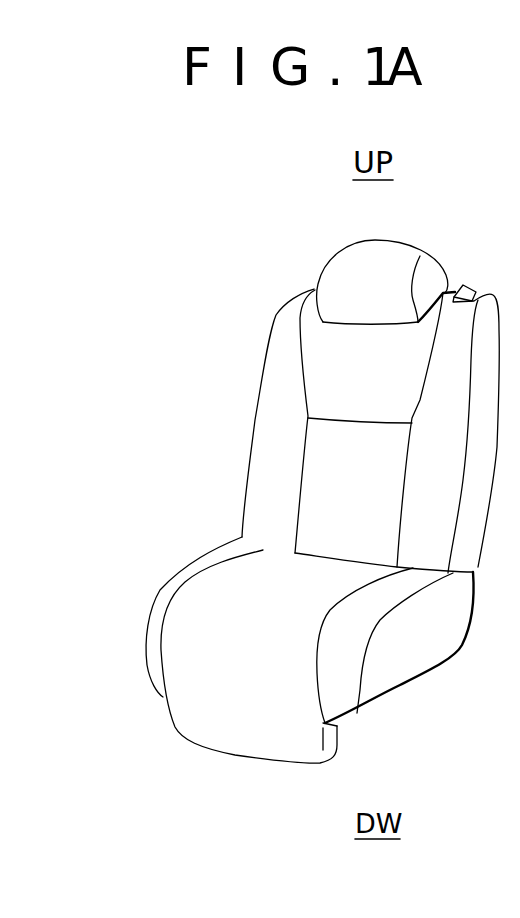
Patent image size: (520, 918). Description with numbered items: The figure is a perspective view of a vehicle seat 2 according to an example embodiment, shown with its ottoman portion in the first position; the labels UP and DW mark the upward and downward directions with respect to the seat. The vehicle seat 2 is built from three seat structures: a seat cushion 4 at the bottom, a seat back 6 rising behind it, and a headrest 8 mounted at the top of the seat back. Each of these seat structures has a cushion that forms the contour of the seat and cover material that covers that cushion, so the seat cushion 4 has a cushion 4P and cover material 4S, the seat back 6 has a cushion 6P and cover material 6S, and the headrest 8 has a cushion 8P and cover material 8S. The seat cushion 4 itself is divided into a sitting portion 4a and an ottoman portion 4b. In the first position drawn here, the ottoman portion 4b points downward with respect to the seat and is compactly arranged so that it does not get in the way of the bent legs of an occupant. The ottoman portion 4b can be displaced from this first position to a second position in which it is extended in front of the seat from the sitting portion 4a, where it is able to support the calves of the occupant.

The vehicle seat 2 is at (467, 242).
The seat cushion 4 is at (275, 599).
The cover material 4S is at (275, 599).
The cushion 4P is at (275, 599).
The sitting portion 4a is at (260, 567).
The ottoman portion 4b is at (193, 655).
The seat back 6 is at (295, 429).
The cover material 6S is at (295, 429).
The cushion 6P is at (320, 369).
The headrest 8 is at (331, 260).
The cover material 8S is at (331, 260).
The cushion 8P is at (358, 270).